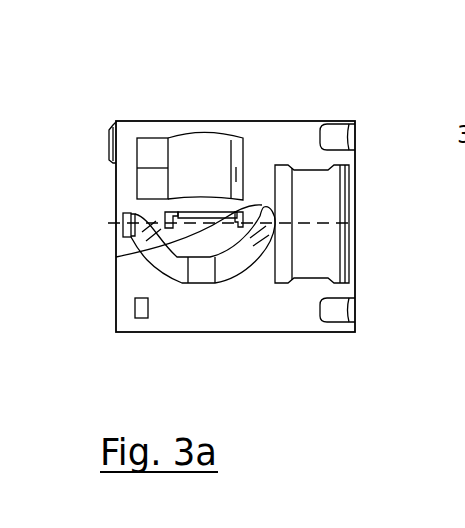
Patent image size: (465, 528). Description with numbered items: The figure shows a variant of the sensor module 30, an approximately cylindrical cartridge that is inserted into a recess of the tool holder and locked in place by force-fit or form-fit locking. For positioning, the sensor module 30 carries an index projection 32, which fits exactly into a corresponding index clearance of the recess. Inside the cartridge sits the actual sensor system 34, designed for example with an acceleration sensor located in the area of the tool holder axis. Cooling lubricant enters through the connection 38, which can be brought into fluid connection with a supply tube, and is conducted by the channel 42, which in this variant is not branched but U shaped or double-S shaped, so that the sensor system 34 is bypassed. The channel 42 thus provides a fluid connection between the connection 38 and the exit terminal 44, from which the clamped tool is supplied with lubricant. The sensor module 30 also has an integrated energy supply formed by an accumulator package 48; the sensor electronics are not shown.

The sensor module 30 is at (199, 109).
The index projection 32 is at (111, 136).
The sensor system 34 is at (130, 255).
The connection 38 is at (356, 198).
The channel 42 is at (225, 268).
The exit terminal 44 is at (121, 223).
The accumulator package 48 is at (206, 180).